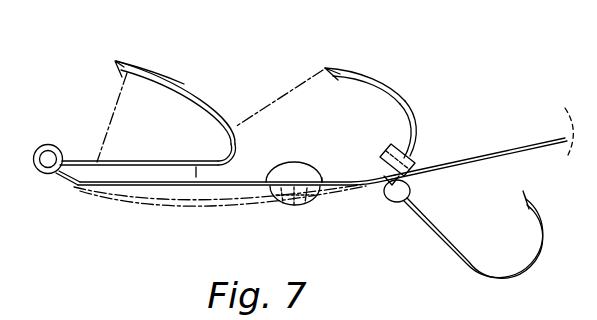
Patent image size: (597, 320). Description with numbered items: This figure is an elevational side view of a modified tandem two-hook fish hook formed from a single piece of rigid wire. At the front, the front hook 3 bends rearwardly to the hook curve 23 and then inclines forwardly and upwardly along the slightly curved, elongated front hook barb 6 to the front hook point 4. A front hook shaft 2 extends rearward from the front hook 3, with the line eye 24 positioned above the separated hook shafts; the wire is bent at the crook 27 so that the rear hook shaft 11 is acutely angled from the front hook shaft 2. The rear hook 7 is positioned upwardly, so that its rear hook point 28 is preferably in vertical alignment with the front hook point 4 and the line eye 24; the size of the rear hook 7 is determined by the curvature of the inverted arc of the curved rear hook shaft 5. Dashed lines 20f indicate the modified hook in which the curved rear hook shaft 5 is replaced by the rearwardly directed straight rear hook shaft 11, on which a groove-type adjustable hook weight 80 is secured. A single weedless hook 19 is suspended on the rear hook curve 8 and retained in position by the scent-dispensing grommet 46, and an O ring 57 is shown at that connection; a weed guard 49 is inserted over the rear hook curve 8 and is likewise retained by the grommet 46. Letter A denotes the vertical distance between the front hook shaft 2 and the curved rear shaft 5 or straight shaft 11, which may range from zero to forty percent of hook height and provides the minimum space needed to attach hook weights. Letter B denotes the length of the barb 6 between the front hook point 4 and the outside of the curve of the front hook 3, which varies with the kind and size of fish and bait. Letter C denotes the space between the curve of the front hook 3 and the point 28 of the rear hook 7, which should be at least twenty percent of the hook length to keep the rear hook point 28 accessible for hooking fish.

The front hook shaft 2 is at (80, 160).
The front hook 3 is at (202, 98).
The front hook point 4 is at (113, 62).
The curved rear hook shaft 5 is at (268, 204).
The front hook barb 6 is at (143, 70).
The rear hook 7 is at (410, 96).
The rear hook curve 8 is at (366, 72).
The rear hook shaft 11 is at (206, 184).
The single hook 19 is at (438, 236).
The modified hook 20f is at (157, 201).
The hook curve 23 is at (233, 143).
The line eye 24 is at (44, 145).
The wire crook 27 is at (68, 181).
The rear hook point 28 is at (324, 66).
The scent-dispensing grommet 46 is at (384, 155).
The weed guard 49 is at (512, 149).
The O ring 57 is at (412, 187).
The adjustable hook weight 80 is at (306, 203).
The vertical distance A is at (184, 169).
The barb length B is at (110, 119).
The space between front hook curve and rear hook point C is at (275, 84).